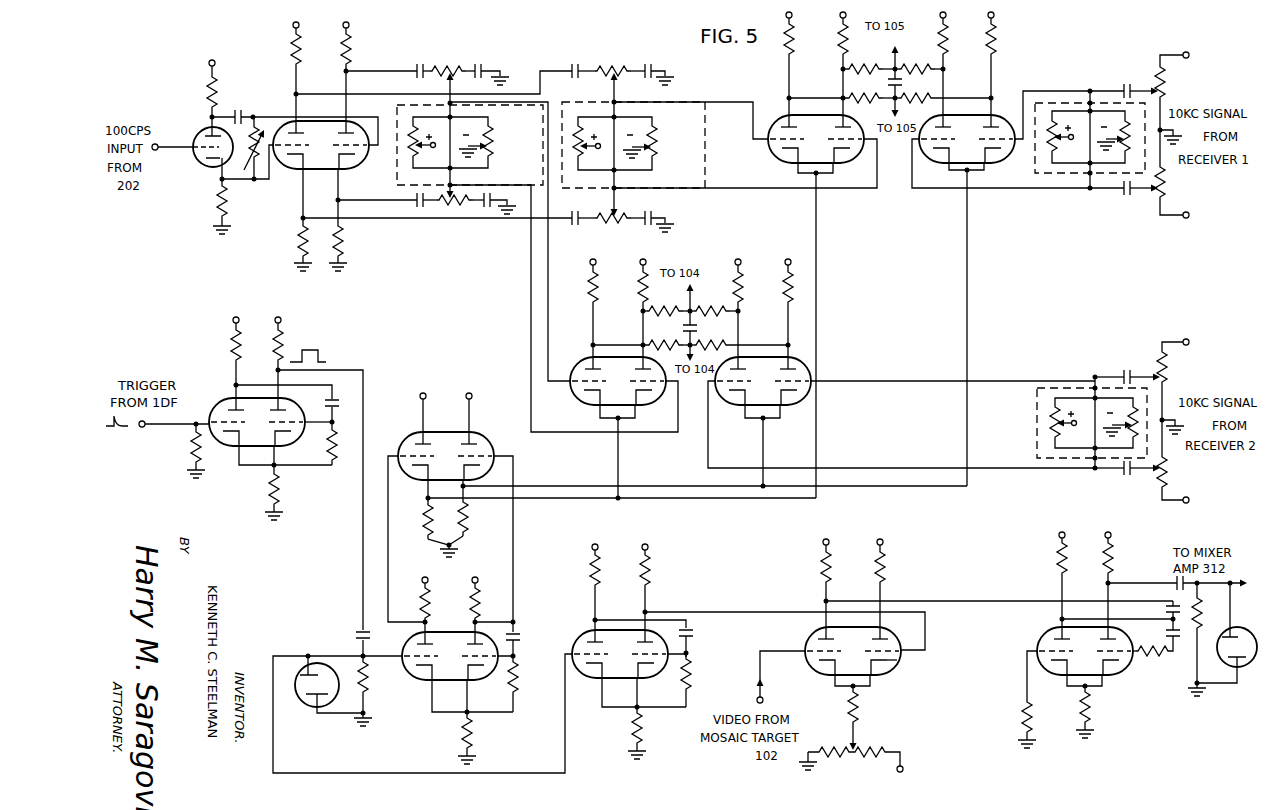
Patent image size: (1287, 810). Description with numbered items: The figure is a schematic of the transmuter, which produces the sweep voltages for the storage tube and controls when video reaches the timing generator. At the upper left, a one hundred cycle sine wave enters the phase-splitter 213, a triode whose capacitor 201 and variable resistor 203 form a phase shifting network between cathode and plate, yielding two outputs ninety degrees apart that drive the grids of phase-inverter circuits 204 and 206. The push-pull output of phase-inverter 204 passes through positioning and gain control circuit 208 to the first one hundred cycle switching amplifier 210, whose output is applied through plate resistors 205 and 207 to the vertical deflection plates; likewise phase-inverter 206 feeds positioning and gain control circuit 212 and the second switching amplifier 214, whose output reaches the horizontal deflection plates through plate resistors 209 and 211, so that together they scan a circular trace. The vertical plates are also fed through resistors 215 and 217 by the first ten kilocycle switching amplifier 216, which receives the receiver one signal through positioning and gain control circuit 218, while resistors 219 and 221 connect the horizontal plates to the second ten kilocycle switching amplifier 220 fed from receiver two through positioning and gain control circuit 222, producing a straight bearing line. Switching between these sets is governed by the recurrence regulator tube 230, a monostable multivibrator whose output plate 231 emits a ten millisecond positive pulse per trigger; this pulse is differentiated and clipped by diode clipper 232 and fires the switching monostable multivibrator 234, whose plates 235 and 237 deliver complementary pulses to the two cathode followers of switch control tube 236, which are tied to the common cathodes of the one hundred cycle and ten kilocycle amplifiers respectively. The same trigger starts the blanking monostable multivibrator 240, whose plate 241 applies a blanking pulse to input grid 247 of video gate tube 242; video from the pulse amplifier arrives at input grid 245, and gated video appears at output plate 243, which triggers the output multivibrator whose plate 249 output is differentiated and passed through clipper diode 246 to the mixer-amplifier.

The capacitor 201 is at (238, 111).
The variable resistor 203 is at (249, 177).
The phase-inverter circuit 204 is at (294, 168).
The plate resistor 205 is at (885, 58).
The phase-inverter circuit 206 is at (357, 169).
The plate resistor 207 is at (847, 98).
The positioning and gain control circuit 208 is at (683, 133).
The plate resistor 209 is at (680, 300).
The first 100 C.P.S. switching amplifier 210 is at (768, 148).
The plate resistor 211 is at (653, 340).
The positioning and gain control circuit 212 is at (498, 143).
The phase-splitter 213 is at (206, 133).
The second 100 C.P.S. switching amplifier 214 is at (585, 403).
The resistor 215 is at (933, 68).
The first 10 kc. switching amplifier 216 is at (1018, 149).
The resistor 217 is at (934, 98).
The positioning and gain control circuit 218 is at (1104, 106).
The resistor 219 is at (730, 307).
The second 10 kc. switching amplifier 220 is at (811, 399).
The resistor 221 is at (727, 341).
The positioning and gain control circuit 222 is at (1108, 386).
The recurrence regulator tube 230 is at (229, 448).
The output plate 231 is at (285, 397).
The diode clipper 232 is at (305, 703).
The switching monostable multivibrator 234 is at (413, 678).
The plate 235 is at (478, 640).
The switch control tube 236 is at (417, 483).
The plate 237 is at (428, 641).
The blanking monostable multivibrator 240 is at (592, 682).
The plate 241 is at (640, 632).
The video gate tube 242 is at (889, 677).
The output plate 243 is at (819, 634).
The input grid 245 is at (807, 662).
The clipper diode 246 is at (1248, 673).
The input grid 247 is at (898, 662).
The plate 249 is at (1120, 636).